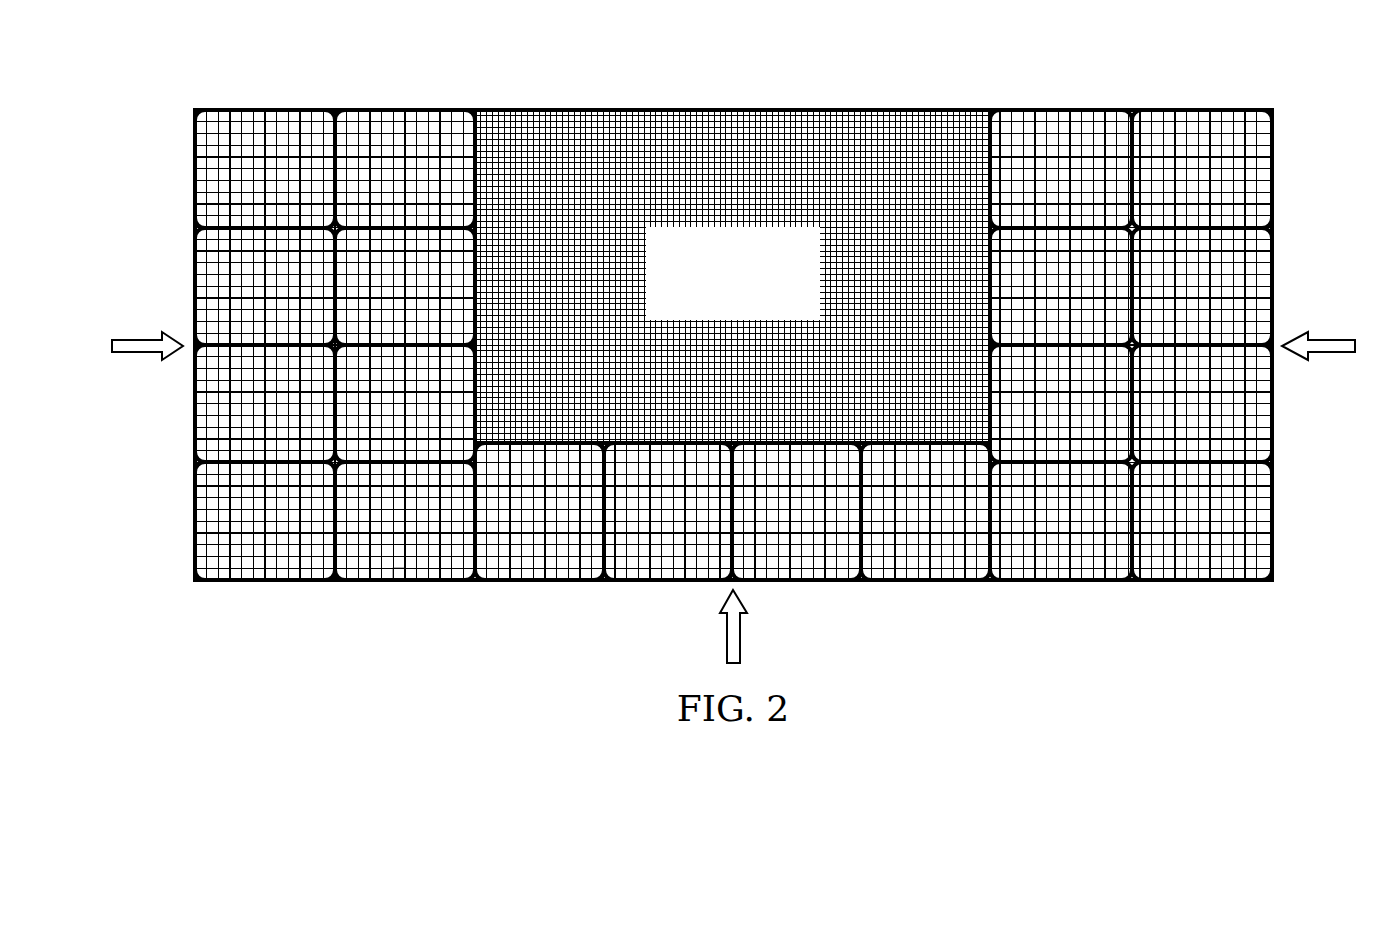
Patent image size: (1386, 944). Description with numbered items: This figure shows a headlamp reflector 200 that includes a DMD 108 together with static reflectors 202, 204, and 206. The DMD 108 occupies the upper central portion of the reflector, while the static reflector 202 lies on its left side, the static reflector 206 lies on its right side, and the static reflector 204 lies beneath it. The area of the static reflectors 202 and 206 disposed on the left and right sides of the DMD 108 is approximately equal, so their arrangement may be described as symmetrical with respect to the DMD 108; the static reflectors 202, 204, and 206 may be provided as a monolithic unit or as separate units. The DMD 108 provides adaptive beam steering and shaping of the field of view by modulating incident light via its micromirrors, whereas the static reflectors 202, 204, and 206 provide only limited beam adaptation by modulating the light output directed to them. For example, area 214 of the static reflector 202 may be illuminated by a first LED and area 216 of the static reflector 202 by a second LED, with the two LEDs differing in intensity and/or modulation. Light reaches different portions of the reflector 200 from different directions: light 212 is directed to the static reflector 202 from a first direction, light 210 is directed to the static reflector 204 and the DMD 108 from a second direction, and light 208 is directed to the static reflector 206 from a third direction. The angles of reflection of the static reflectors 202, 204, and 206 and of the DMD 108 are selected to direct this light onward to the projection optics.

The headlamp reflector 200 is at (693, 324).
The static reflector 202 is at (295, 342).
The static reflector 204 is at (668, 582).
The static reflector 206 is at (1162, 109).
The DMD 108 is at (730, 109).
The light 208 is at (1318, 333).
The light 210 is at (740, 630).
The light 212 is at (148, 332).
The area 214 is at (200, 527).
The area 216 is at (400, 572).